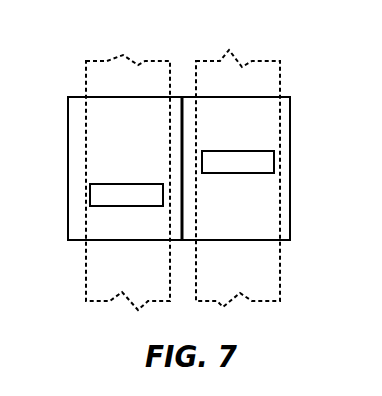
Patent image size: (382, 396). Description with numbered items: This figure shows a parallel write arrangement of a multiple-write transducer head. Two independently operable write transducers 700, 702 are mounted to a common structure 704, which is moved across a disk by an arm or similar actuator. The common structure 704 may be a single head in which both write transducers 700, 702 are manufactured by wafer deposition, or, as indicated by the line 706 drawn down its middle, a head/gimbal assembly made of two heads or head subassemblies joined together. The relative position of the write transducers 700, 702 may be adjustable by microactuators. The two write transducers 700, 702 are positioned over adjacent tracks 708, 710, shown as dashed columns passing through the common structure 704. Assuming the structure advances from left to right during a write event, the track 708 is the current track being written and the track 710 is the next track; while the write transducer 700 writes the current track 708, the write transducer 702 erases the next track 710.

The write transducer 700 is at (92, 195).
The write transducer 702 is at (274, 159).
The common structure 704 is at (288, 230).
The line 706 is at (183, 117).
The track 708 is at (100, 61).
The track 710 is at (277, 61).